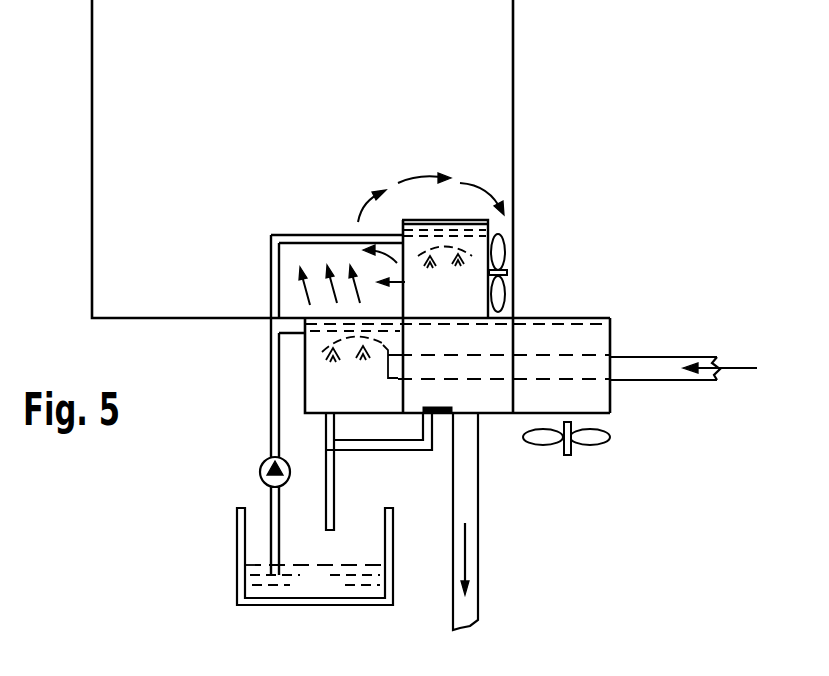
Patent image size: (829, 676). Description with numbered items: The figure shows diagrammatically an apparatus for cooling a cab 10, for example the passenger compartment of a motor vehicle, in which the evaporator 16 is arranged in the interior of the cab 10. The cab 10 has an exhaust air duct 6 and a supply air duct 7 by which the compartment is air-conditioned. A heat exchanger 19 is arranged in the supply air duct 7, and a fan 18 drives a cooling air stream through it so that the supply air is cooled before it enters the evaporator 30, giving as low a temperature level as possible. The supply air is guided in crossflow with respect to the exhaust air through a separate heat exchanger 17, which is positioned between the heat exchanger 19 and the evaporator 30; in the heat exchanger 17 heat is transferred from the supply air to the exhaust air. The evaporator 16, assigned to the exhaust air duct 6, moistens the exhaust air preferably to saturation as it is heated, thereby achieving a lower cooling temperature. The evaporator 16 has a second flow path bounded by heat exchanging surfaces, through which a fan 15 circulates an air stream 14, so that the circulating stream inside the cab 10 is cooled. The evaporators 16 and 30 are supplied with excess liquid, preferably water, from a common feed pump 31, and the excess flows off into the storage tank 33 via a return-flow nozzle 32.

The cab 10 is at (262, 104).
The air stream 14 is at (407, 183).
The evaporator 16 is at (467, 222).
The fan 15 is at (500, 247).
The supply air duct 7 is at (652, 362).
The evaporator 30 is at (365, 409).
The heat exchanger 17 is at (437, 395).
The heat exchanger 19 is at (597, 405).
The fan 18 is at (598, 440).
The exhaust air duct 6 is at (470, 537).
The feed pump 31 is at (261, 470).
The return-flow nozzle 32 is at (336, 478).
The storage tank 33 is at (308, 606).